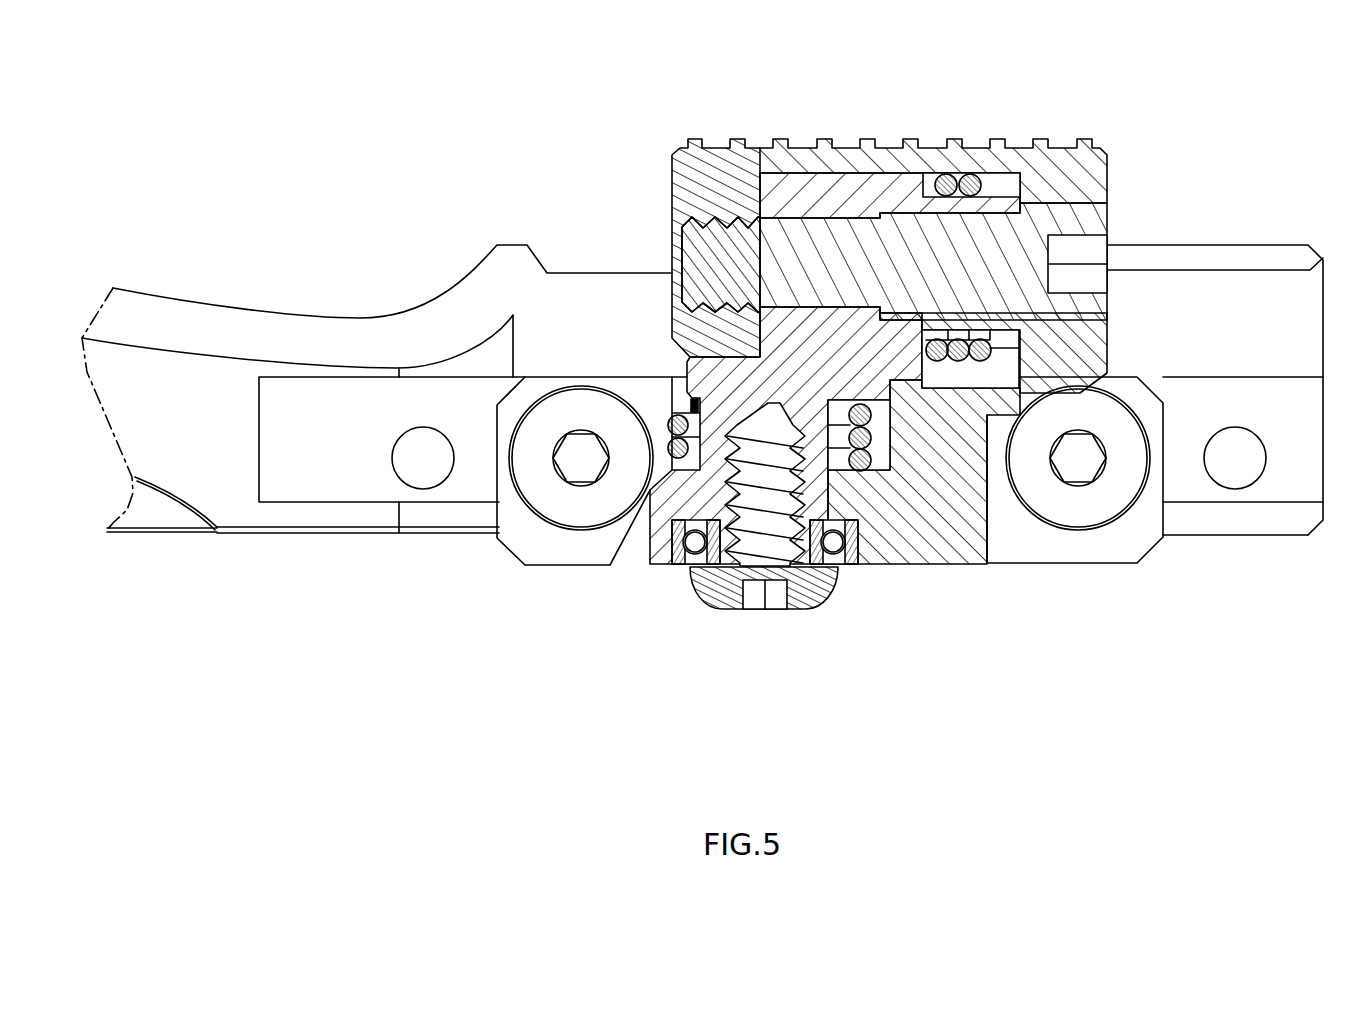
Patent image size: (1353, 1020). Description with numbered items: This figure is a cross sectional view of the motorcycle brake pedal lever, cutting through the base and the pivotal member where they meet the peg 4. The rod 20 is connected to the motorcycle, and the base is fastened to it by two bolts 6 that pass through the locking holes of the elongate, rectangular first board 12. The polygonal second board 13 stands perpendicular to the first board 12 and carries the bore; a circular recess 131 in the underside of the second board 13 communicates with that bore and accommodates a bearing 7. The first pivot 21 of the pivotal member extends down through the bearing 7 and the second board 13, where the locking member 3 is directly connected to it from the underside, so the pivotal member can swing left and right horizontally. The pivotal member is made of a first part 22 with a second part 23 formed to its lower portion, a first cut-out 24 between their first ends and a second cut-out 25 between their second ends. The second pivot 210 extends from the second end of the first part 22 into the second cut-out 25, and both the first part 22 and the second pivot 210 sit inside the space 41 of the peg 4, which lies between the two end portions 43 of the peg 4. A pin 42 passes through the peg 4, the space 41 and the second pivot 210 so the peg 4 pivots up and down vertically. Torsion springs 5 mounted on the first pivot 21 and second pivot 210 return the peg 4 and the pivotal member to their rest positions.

The locking member 3 is at (717, 600).
The peg 4 is at (848, 128).
The torsion springs 5 is at (934, 160).
The bolts 6 is at (1082, 512).
The bearing 7 is at (683, 568).
The first board 12 is at (1143, 542).
The second board 13 is at (900, 560).
The circular recess 131 is at (843, 567).
The rod 20 is at (1248, 245).
The first pivot 21 is at (704, 470).
The first part 22 is at (808, 197).
The second part 23 is at (686, 368).
The first cut-out 24 is at (770, 195).
The second cut-out 25 is at (937, 380).
The space 41 is at (1035, 178).
The pin 42 is at (1112, 230).
The end portions 43 is at (673, 180).
The second pivot 210 is at (993, 198).